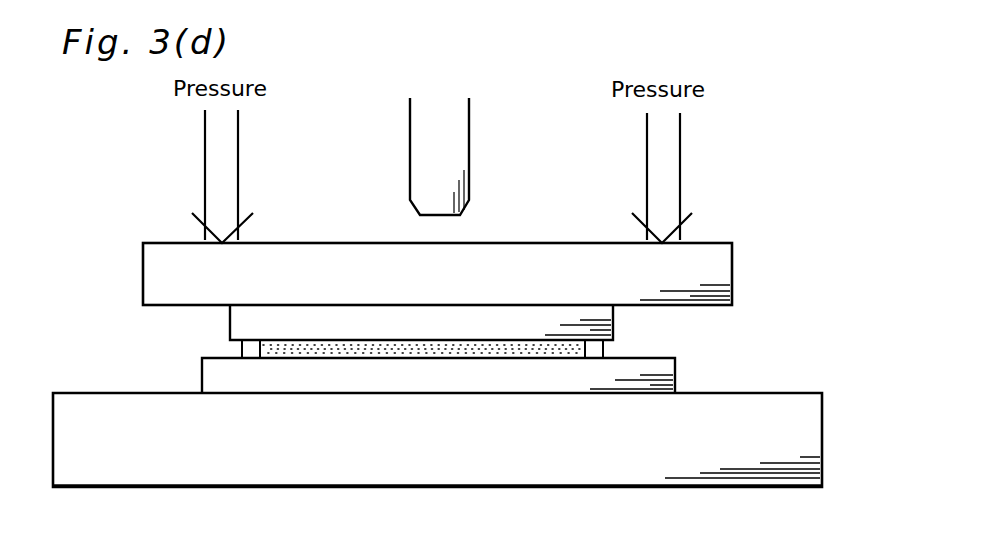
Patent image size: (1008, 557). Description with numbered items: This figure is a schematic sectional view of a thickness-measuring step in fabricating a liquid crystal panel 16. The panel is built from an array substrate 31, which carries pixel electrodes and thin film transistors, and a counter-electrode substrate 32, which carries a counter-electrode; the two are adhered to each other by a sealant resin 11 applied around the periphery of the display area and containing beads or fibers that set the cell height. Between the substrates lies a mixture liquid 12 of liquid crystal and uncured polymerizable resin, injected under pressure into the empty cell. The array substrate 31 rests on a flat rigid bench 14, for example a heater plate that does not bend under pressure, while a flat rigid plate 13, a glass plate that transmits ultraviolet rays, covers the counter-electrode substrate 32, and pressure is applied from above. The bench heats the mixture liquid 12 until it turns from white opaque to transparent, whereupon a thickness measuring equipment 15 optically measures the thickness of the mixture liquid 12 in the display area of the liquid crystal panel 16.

The sealant resin 11 is at (243, 347).
The mixture liquid 12 is at (378, 350).
The flat rigid plate 13 is at (697, 250).
The flat rigid bench 14 is at (778, 407).
The thickness measuring equipment 15 is at (455, 157).
The liquid crystal panel 16 is at (688, 306).
The array substrate 31 is at (213, 377).
The counter-electrode substrate 32 is at (240, 318).